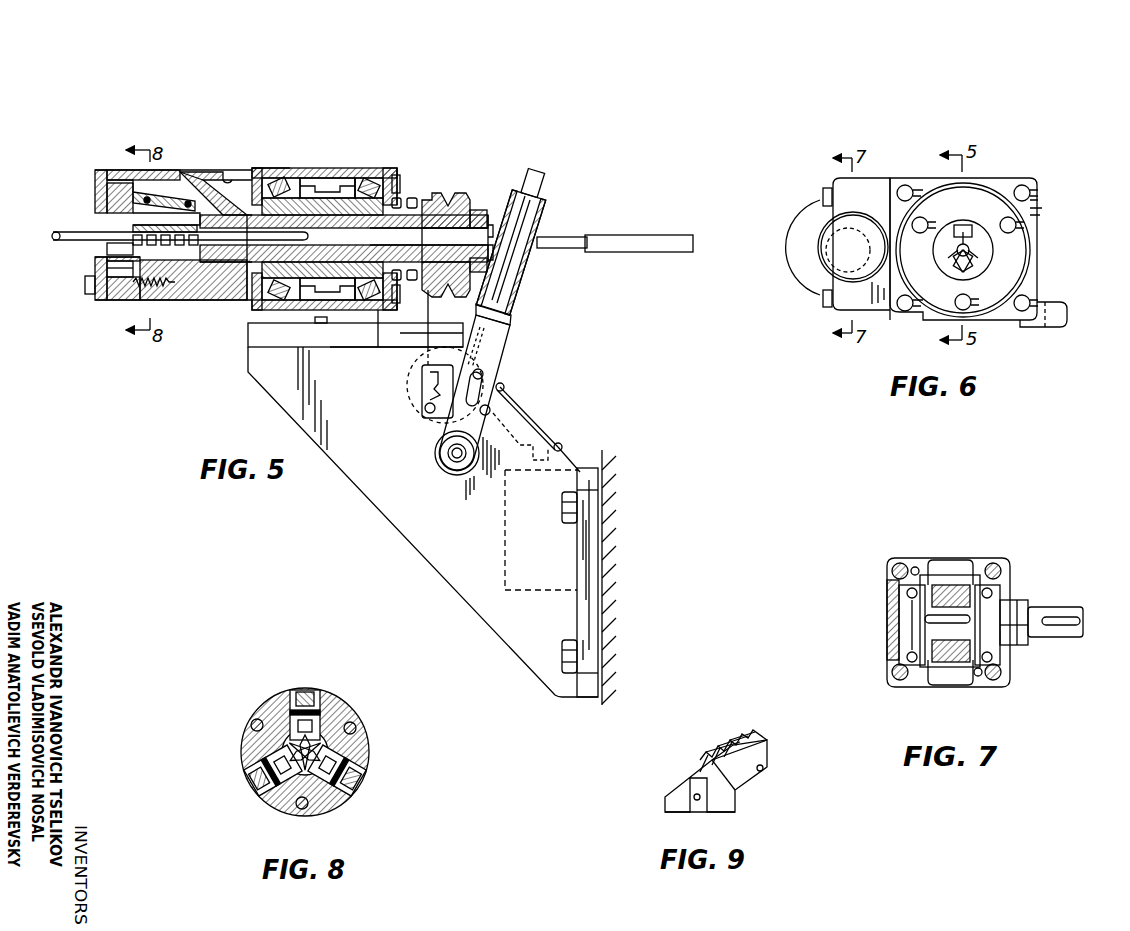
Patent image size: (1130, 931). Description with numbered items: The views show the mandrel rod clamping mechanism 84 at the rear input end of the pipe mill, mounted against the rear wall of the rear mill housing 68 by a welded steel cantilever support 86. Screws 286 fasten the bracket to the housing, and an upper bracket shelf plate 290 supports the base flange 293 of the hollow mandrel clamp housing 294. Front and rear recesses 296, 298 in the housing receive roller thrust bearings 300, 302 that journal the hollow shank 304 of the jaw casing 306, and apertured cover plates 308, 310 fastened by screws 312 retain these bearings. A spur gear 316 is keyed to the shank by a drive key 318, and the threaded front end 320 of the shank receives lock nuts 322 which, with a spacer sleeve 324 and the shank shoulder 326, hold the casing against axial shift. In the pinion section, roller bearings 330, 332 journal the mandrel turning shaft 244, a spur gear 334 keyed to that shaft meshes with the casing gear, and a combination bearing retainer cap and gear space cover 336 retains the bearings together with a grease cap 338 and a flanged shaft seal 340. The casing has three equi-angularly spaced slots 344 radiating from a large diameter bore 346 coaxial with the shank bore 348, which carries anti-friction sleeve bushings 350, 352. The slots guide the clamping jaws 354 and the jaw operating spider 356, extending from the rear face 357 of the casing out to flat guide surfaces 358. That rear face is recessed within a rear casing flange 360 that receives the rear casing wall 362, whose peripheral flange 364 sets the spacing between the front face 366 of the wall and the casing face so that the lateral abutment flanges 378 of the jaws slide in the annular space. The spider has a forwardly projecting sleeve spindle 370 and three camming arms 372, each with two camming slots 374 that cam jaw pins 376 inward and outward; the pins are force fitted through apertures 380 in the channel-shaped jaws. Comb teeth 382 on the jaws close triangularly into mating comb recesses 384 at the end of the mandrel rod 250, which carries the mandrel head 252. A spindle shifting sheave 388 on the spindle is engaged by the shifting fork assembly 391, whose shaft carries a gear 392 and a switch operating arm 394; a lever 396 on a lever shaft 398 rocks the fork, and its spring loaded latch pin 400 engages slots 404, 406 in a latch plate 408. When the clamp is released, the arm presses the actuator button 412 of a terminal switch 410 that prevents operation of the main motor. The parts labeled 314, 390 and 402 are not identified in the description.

In FIG. 5, the rear mill housing 68 is at (600, 465).
In FIG. 5, the mandrel rod clamping mechanism 84 is at (265, 166).
In FIG. 6, the mandrel rod clamping mechanism 84 is at (1003, 174).
In FIG. 5, the cantilever support 86 is at (370, 408).
In FIG. 7, the mandrel turning shaft 244 is at (1012, 643).
In FIG. 5, the mandrel rod 250 is at (53, 235).
In FIG. 6, the mandrel rod 250 is at (948, 253).
In FIG. 5, the mandrel head 252 is at (658, 236).
In FIG. 5, the screws 286 is at (562, 508).
In FIG. 5, the upper bracket shelf plate 290 is at (248, 347).
In FIG. 5, the base flange 293 is at (345, 347).
In FIG. 6, the base flange 293 is at (1064, 316).
In FIG. 5, the mandrel clamp housing 294 is at (320, 168).
In FIG. 6, the mandrel clamp housing 294 is at (893, 320).
In FIG. 5, the front recess 296 is at (372, 182).
In FIG. 5, the rear recess 298 is at (300, 185).
In FIG. 5, the roller thrust bearing 300 is at (362, 178).
In FIG. 5, the roller thrust bearing 302 is at (280, 180).
In FIG. 5, the hollow shank 304 is at (320, 352).
In FIG. 8, the hollow shank 304 is at (262, 708).
In FIG. 5, the jaw casing 306 is at (213, 302).
In FIG. 5, the cover plate 308 is at (395, 175).
In FIG. 5, the cover plate 310 is at (258, 178).
In FIG. 5, the screws 312 is at (400, 182).
In FIG. 6, the bolt 314 is at (1028, 190).
In FIG. 5, the spur gear 316 is at (340, 186).
In FIG. 5, the drive key 318 is at (345, 228).
In FIG. 5, the threaded front end 320 is at (443, 208).
In FIG. 5, the lock nuts 322 is at (410, 198).
In FIG. 5, the spacer sleeve 324 is at (385, 310).
In FIG. 5, the shank shoulder 326 is at (280, 347).
In FIG. 7, the roller bearing 330 is at (988, 563).
In FIG. 7, the roller bearing 332 is at (900, 565).
In FIG. 7, the spur gear 334 is at (958, 676).
In FIG. 6, the bearing retainer cap and gear space cover 336 is at (880, 246).
In FIG. 7, the bearing retainer cap and gear space cover 336 is at (912, 684).
In FIG. 6, the grease cap 338 is at (870, 280).
In FIG. 7, the grease cap 338 is at (887, 613).
In FIG. 7, the flanged shaft seal 340 is at (1010, 604).
In FIG. 8, the casing slots 344 is at (292, 698).
In FIG. 5, the large diameter bore 346 is at (185, 300).
In FIG. 8, the large diameter bore 346 is at (335, 745).
In FIG. 5, the shank bore 348 is at (306, 236).
In FIG. 5, the anti-friction sleeve bushing 350 is at (429, 236).
In FIG. 5, the anti-friction sleeve bushing 352 is at (234, 198).
In FIG. 5, the clamping jaws 354 is at (135, 222).
In FIG. 6, the clamping jaws 354 is at (978, 210).
In FIG. 8, the clamping jaws 354 is at (285, 745).
In FIG. 9, the clamping jaws 354 is at (762, 750).
In FIG. 5, the jaw operating spider 356 is at (215, 185).
In FIG. 5, the rear face 357 is at (95, 262).
In FIG. 5, the flat guide surfaces 358 is at (125, 172).
In FIG. 8, the flat guide surfaces 358 is at (305, 690).
In FIG. 5, the rear casing flange 360 is at (100, 300).
In FIG. 5, the rear casing wall 362 is at (100, 190).
In FIG. 5, the peripheral flange 364 is at (103, 300).
In FIG. 5, the front face 366 is at (110, 250).
In FIG. 5, the sleeve spindle 370 is at (405, 253).
In FIG. 5, the camming arms 372 is at (172, 170).
In FIG. 8, the camming arms 372 is at (317, 700).
In FIG. 5, the camming slots 374 is at (100, 175).
In FIG. 8, the camming slots 374 is at (345, 788).
In FIG. 5, the jaw pins 376 is at (106, 203).
In FIG. 8, the jaw pins 376 is at (322, 715).
In FIG. 5, the abutment flanges 378 is at (130, 300).
In FIG. 9, the abutment flanges 378 is at (667, 804).
In FIG. 9, the apertures 380 is at (695, 795).
In FIG. 9, the comb teeth 382 is at (718, 735).
In FIG. 5, the comb recesses 384 is at (160, 300).
In FIG. 5, the spindle shifting sheave 388 is at (478, 210).
In FIG. 5, the piston rod 390 is at (500, 288).
In FIG. 5, the shifting fork assembly 391 is at (514, 320).
In FIG. 5, the gear 392 is at (484, 371).
In FIG. 5, the switch operating arm 394 is at (533, 418).
In FIG. 5, the lever 396 is at (437, 446).
In FIG. 5, the lever shaft 398 is at (449, 456).
In FIG. 5, the latch pin 400 is at (485, 378).
In FIG. 5, the cylinder 402 is at (548, 166).
In FIG. 5, the latch slot 404 is at (424, 390).
In FIG. 5, the latch slot 406 is at (503, 387).
In FIG. 5, the latch plate 408 is at (425, 410).
In FIG. 5, the terminal switch 410 is at (503, 522).
In FIG. 5, the actuator button 412 is at (559, 443).